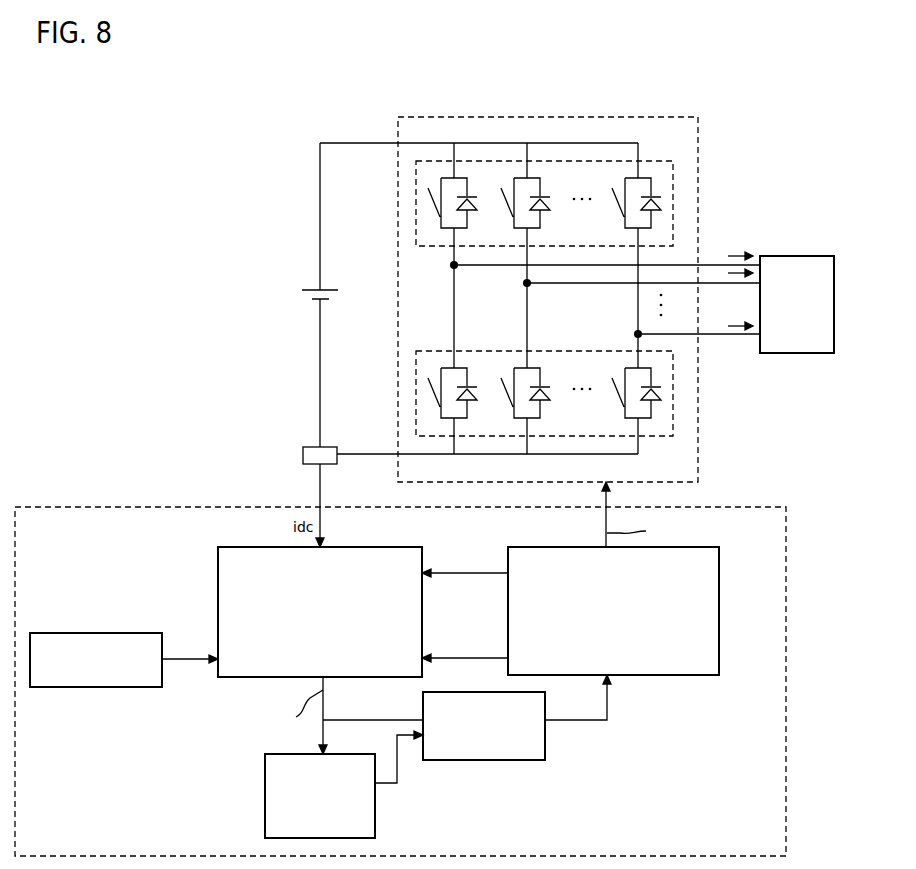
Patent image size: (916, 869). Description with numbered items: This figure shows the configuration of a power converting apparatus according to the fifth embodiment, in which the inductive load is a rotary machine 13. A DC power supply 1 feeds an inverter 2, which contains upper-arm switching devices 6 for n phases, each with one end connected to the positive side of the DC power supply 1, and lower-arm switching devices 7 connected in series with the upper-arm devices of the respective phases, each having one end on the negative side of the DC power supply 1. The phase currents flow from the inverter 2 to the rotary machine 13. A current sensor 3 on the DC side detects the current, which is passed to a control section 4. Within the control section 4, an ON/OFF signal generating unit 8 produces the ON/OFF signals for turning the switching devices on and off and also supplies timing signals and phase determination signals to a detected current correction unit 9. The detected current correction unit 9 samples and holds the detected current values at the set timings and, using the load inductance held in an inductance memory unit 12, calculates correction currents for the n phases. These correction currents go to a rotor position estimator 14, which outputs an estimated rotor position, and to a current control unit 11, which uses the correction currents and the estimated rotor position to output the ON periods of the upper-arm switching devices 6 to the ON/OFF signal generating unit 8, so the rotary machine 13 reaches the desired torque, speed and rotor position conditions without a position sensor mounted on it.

The DC power supply 1 is at (310, 287).
The inverter 2 is at (540, 289).
The current sensor 3 is at (310, 447).
The control section 4 is at (720, 507).
The upper-arm switching devices 6 is at (673, 181).
The lower-arm switching devices 7 is at (673, 380).
The ON/OFF signal generating unit 8 is at (719, 620).
The detected current correction unit 9 is at (218, 572).
The current control unit 11 is at (545, 740).
The inductance memory unit 12 is at (65, 633).
The rotary machine 13 is at (793, 256).
The rotor position estimator 14 is at (265, 775).